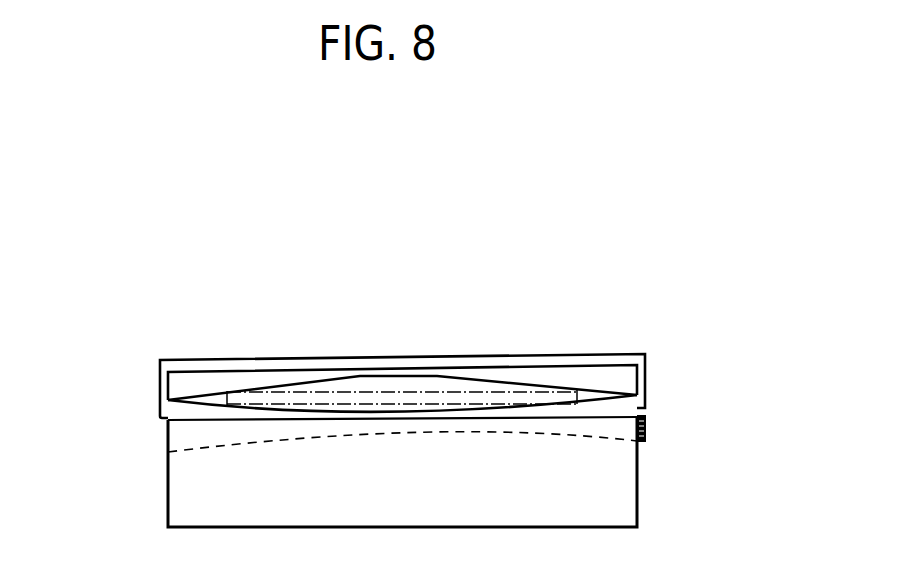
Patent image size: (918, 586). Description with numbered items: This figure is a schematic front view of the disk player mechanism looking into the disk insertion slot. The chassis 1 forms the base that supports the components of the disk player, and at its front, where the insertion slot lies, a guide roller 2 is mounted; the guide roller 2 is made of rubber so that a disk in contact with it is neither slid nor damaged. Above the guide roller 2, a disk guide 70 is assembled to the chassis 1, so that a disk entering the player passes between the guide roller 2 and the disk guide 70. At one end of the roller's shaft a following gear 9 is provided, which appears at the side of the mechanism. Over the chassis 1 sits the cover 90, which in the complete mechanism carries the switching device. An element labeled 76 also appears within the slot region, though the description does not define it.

The chassis 1 is at (183, 500).
The guide roller 2 is at (185, 415).
The following gear 9 is at (646, 433).
The disk guide 70 is at (598, 373).
The internal light guide element 76 is at (441, 395).
The cover 90 is at (310, 358).